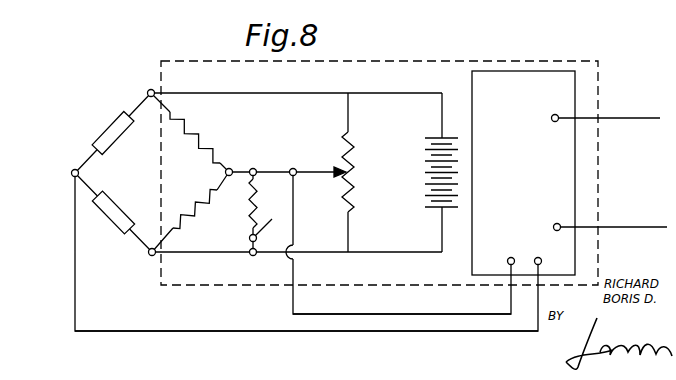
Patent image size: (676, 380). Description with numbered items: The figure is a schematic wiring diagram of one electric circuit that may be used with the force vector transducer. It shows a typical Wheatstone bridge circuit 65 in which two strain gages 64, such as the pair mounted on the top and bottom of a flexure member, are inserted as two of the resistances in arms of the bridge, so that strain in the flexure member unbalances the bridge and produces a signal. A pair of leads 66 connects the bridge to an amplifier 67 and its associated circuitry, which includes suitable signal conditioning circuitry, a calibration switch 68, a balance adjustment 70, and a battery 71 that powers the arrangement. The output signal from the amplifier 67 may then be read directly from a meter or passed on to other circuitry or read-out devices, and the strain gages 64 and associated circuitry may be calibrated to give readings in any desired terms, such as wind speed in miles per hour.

The strain gages 64 is at (110, 127).
The Wheatstone bridge circuit 65 is at (196, 126).
The leads 66 is at (217, 332).
The amplifier 67 is at (576, 173).
The calibration switch 68 is at (250, 231).
The balance adjustment 70 is at (338, 164).
The battery 71 is at (424, 165).